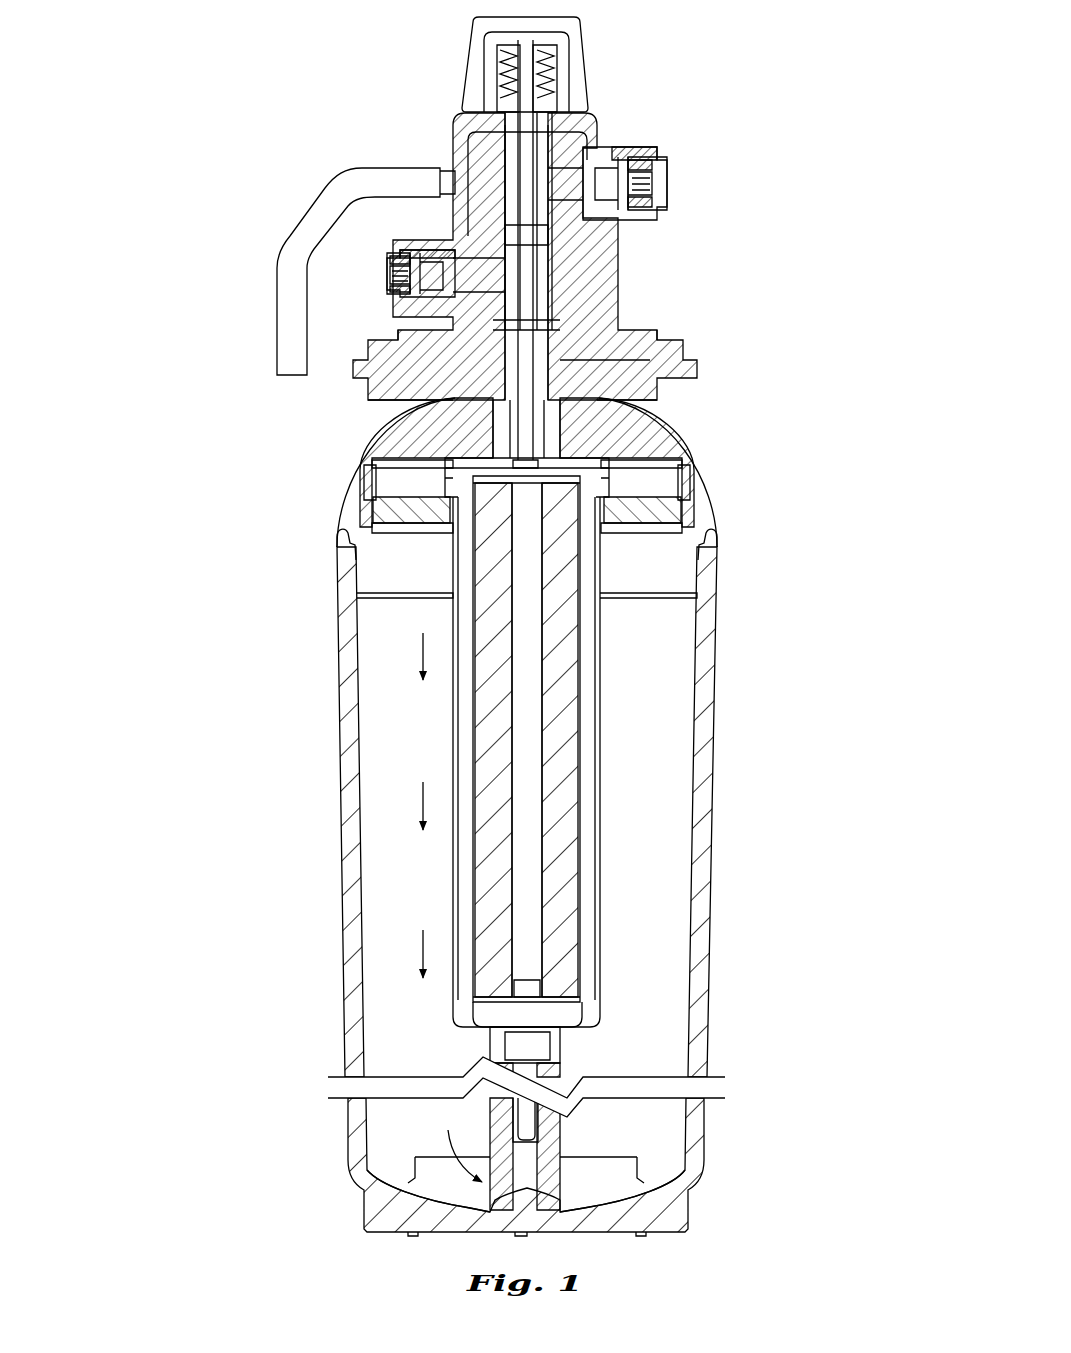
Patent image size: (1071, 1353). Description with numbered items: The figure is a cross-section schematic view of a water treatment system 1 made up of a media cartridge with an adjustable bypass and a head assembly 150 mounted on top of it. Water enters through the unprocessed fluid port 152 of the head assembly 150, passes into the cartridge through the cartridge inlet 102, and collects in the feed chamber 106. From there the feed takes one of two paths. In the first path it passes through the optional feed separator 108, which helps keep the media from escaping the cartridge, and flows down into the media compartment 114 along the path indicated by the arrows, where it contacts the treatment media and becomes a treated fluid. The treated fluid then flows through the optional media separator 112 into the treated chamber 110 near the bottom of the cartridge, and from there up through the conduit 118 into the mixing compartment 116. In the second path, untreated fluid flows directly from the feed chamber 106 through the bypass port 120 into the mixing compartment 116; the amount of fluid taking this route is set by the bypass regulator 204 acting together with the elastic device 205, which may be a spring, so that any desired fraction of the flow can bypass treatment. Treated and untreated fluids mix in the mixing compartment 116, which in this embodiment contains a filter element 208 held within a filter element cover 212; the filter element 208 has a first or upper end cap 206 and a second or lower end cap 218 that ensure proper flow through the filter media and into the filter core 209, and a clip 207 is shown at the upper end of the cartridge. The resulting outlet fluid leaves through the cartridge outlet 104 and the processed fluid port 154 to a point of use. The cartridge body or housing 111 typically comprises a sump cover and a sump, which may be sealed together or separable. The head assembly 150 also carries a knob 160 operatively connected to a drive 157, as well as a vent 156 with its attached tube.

The water treatment system 1 is at (740, 49).
The cartridge inlet 102 is at (560, 297).
The cartridge outlet 104 is at (535, 233).
The feed chamber 106 is at (395, 462).
The feed separator 108 is at (383, 478).
The treated chamber 110 is at (623, 1177).
The body or housing 111 is at (706, 555).
The media separator 112 is at (617, 1157).
The media compartment 114 is at (675, 850).
The mixing compartment 116 is at (588, 679).
The conduit 118 is at (528, 1128).
The bypass port 120 is at (543, 371).
The head assembly 150 is at (603, 126).
The unprocessed fluid port 152 is at (392, 276).
The processed fluid port 154 is at (662, 184).
The vent 156 is at (290, 380).
The drive 157 is at (530, 102).
The knob 160 is at (577, 32).
The bypass regulator 204 is at (526, 287).
The elastic device 205 is at (548, 428).
The first/upper end cap 206 is at (690, 484).
The clip 207 is at (445, 481).
The filter element 208 is at (480, 735).
The filter core 209 is at (525, 875).
The filter element cover 212 is at (367, 587).
The second/lower end cap 218 is at (575, 1012).